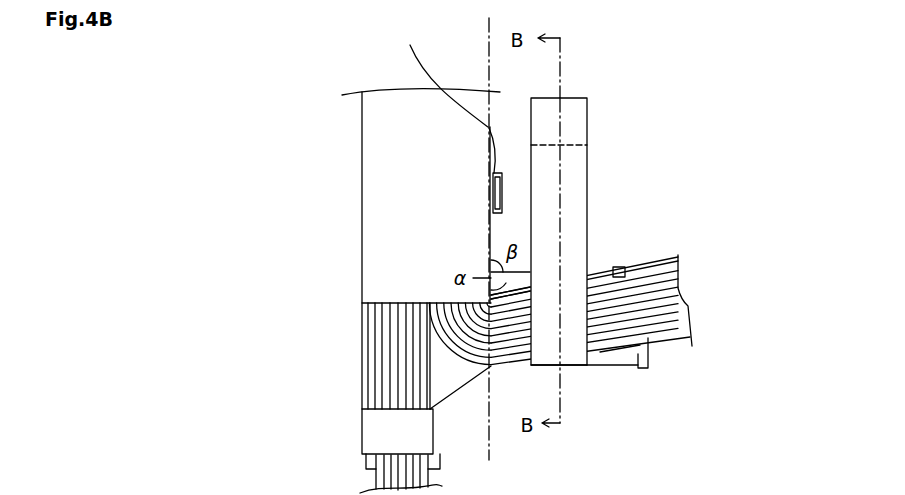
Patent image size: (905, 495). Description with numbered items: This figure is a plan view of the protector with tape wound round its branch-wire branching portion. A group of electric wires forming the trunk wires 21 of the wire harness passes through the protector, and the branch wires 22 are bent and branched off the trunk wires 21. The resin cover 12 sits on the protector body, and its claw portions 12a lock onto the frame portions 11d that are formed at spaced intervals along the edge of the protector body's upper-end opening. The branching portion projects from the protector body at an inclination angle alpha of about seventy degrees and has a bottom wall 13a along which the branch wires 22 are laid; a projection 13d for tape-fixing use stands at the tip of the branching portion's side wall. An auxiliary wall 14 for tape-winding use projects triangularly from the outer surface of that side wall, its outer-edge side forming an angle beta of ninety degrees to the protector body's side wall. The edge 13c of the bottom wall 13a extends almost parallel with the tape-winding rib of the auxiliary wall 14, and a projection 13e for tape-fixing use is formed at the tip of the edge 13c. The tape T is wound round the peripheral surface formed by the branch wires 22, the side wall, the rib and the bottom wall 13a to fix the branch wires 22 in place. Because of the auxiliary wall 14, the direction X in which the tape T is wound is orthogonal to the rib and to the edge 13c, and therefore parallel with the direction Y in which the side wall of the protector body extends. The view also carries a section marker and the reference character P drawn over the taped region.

The frame portion 11d is at (442, 95).
The cover 12 is at (378, 199).
The claw portion 12a is at (493, 190).
The bottom wall 13a is at (618, 353).
The edge 13c is at (605, 365).
The projection for tape-fixing use 13d is at (624, 267).
The projection for tape-fixing use 13e is at (648, 369).
The auxiliary wall for tape-winding use 14 is at (518, 280).
The trunk wire 21 is at (378, 476).
The branch wire 22 is at (692, 346).
The tape T is at (545, 362).
The press member P is at (573, 123).
The direction in which the tape is wound X is at (560, 64).
The direction in which the side wall extends Y is at (488, 47).